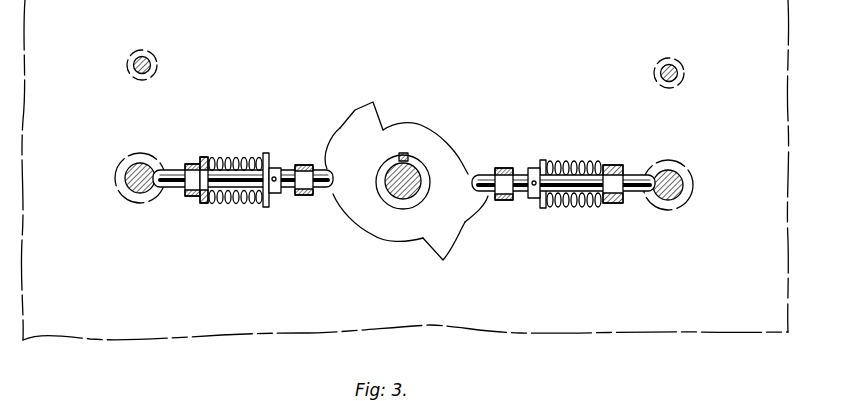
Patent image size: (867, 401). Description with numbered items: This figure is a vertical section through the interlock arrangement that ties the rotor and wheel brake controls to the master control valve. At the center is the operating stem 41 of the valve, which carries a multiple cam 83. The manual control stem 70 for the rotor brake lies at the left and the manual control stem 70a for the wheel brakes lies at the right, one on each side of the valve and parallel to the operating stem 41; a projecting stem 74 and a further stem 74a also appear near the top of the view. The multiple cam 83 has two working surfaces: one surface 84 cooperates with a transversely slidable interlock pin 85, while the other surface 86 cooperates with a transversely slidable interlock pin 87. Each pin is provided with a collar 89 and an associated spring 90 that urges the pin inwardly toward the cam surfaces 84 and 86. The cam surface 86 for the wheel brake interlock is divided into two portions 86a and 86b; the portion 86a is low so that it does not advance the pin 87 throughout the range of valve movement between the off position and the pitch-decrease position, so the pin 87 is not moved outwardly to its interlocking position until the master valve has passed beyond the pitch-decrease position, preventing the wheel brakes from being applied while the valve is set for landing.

The operating stem 41 is at (388, 172).
The manual control stem 70 is at (128, 200).
The manual control stem 70a is at (683, 188).
The projecting stem 74 is at (150, 57).
The stud 74a is at (680, 72).
The multiple cam 83 is at (448, 238).
The cam surface 84 is at (388, 241).
The interlock pin 85 is at (293, 193).
The cam surface 86 is at (415, 170).
The cam surface portion 86a is at (400, 128).
The cam surface portion 86b is at (465, 167).
The interlock pin 87 is at (515, 176).
The collar 89 is at (267, 155).
The spring 90 is at (228, 155).